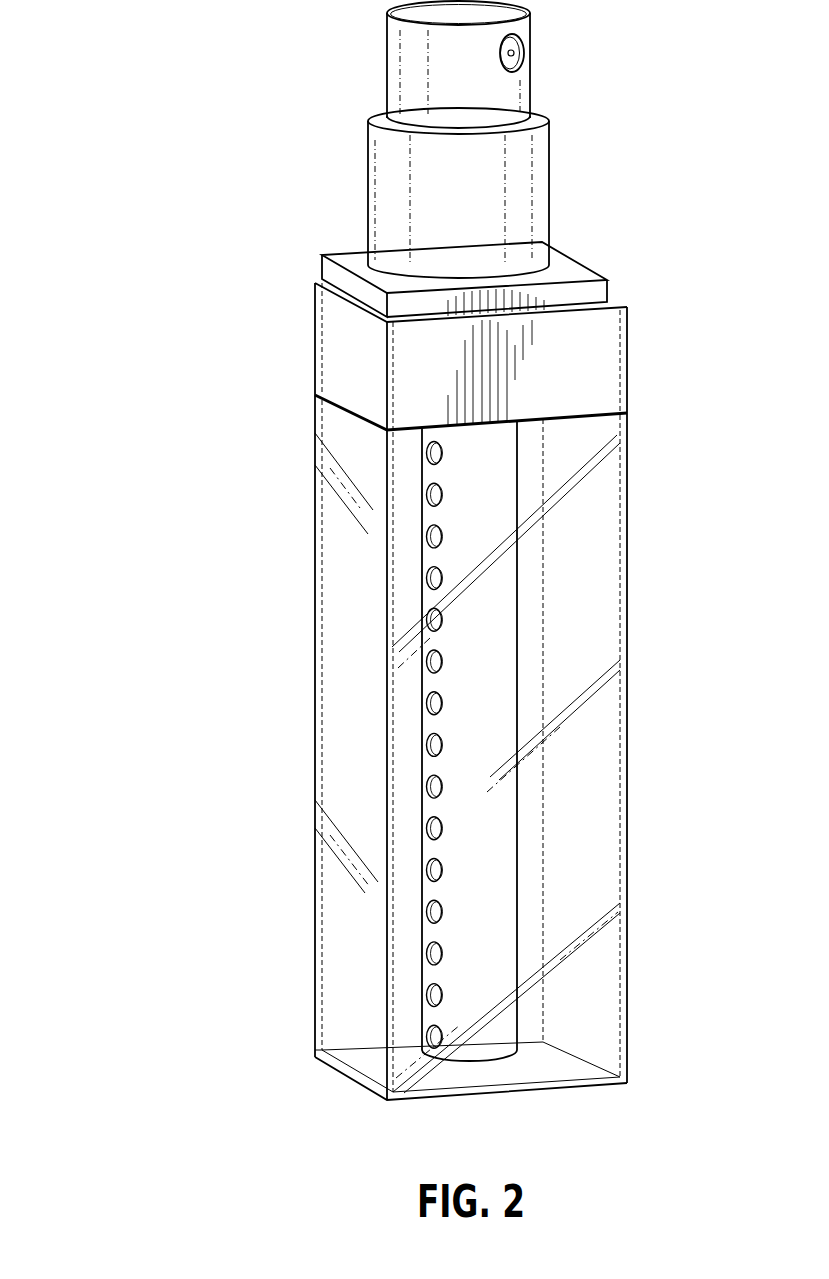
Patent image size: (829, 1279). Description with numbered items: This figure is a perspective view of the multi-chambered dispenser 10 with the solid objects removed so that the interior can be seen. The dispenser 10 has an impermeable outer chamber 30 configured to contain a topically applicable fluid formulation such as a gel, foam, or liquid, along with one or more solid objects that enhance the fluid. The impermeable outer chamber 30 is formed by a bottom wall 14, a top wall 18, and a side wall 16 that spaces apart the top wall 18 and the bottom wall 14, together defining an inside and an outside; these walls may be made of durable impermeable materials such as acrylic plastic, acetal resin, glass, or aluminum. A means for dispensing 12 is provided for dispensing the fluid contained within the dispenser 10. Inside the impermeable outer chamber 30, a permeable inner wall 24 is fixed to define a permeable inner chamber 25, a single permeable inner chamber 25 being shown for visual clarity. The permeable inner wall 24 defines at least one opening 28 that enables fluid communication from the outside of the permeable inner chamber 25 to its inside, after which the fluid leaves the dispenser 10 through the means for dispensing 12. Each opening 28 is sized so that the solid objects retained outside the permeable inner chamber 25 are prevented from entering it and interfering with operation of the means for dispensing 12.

The multi-chambered dispenser 10 is at (146, 142).
The means for dispensing 12 is at (363, 118).
The bottom wall 14 is at (586, 1091).
The side wall 16 is at (628, 590).
The top wall 18 is at (572, 273).
The permeable inner wall 24 is at (442, 973).
The permeable inner chamber 25 is at (433, 787).
The opening 28 is at (437, 662).
The impermeable outer chamber 30 is at (296, 571).